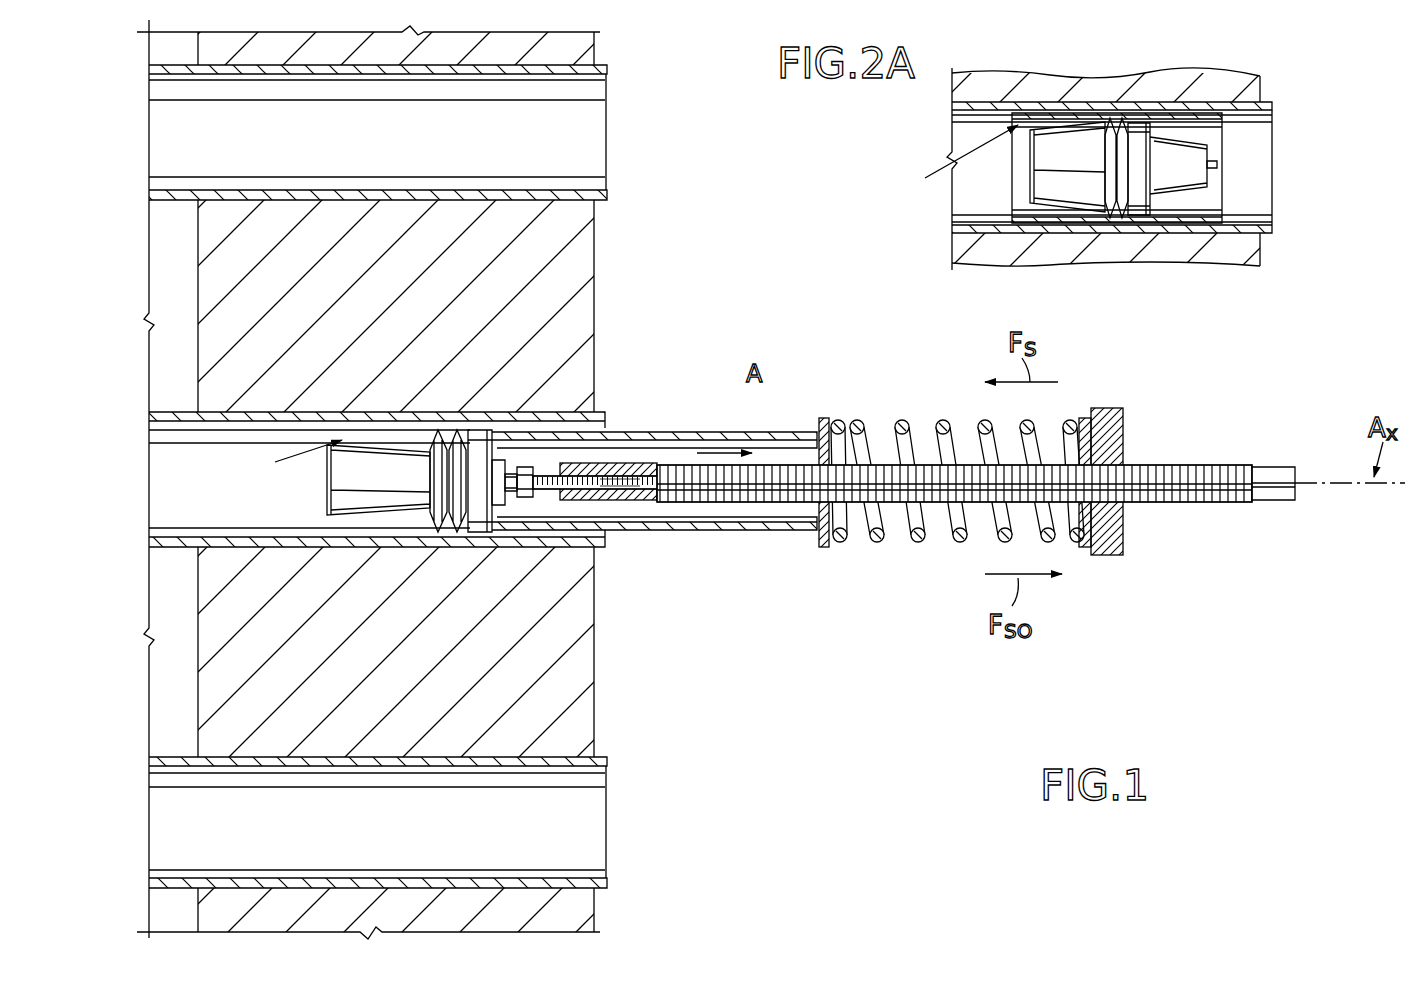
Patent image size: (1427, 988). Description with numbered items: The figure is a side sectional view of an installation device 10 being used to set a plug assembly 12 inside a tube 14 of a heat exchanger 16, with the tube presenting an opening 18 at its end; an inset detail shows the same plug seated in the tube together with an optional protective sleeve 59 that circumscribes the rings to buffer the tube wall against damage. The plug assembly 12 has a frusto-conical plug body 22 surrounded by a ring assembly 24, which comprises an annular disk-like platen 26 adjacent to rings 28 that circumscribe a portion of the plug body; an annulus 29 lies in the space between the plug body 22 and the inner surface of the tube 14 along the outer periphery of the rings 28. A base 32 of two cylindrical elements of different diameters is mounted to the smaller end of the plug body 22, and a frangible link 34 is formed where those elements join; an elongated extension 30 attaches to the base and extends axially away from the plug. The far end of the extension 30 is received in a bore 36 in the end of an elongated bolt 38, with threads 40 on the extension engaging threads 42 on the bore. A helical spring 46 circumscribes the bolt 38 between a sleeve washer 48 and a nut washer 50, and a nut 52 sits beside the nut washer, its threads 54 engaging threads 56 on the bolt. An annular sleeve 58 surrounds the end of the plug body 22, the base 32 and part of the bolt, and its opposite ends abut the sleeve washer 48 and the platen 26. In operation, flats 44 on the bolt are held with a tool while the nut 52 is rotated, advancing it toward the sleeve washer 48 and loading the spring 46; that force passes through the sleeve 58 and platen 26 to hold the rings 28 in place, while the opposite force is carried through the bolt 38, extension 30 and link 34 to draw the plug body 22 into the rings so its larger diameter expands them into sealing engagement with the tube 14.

In FIG. 1, the installation device 10 is at (819, 360).
In FIG. 1, the plug assembly 12 is at (392, 540).
In FIG. 2A, the plug assembly 12 is at (1214, 244).
In FIG. 1, the tube 14 is at (236, 547).
In FIG. 2A, the tube 14 is at (1168, 233).
In FIG. 2A, the heat exchanger 16 is at (1273, 78).
In FIG. 1, the opening 18 is at (612, 539).
In FIG. 1, the plug body 22 is at (354, 500).
In FIG. 2A, the plug body 22 is at (1070, 186).
In FIG. 1, the ring assembly 24 is at (449, 404).
In FIG. 2A, the ring assembly 24 is at (1163, 94).
In FIG. 1, the platen 26 is at (482, 428).
In FIG. 2A, the platen 26 is at (1167, 169).
In FIG. 1, the rings 28 is at (426, 440).
In FIG. 2A, the rings 28 is at (1100, 126).
In FIG. 1, the annulus 29 is at (290, 458).
In FIG. 2A, the annulus 29 is at (955, 163).
In FIG. 1, the extension 30 is at (548, 492).
In FIG. 1, the base 32 is at (525, 500).
In FIG. 2A, the base 32 is at (1219, 165).
In FIG. 1, the frangible link 34 is at (500, 505).
In FIG. 1, the bore 36 is at (654, 464).
In FIG. 1, the bolt 38 is at (1229, 453).
In FIG. 1, the threads 40 is at (506, 458).
In FIG. 1, the threads 42 is at (622, 476).
In FIG. 1, the flats 44 is at (1262, 506).
In FIG. 1, the spring 46 is at (923, 552).
In FIG. 1, the sleeve washer 48 is at (826, 418).
In FIG. 1, the nut washer 50 is at (1086, 416).
In FIG. 1, the nut 52 is at (1106, 556).
In FIG. 1, the threads 54 is at (1140, 492).
In FIG. 1, the threads 56 is at (1168, 465).
In FIG. 1, the sleeve 58 is at (726, 531).
In FIG. 2A, the protective sleeve 59 is at (1196, 215).